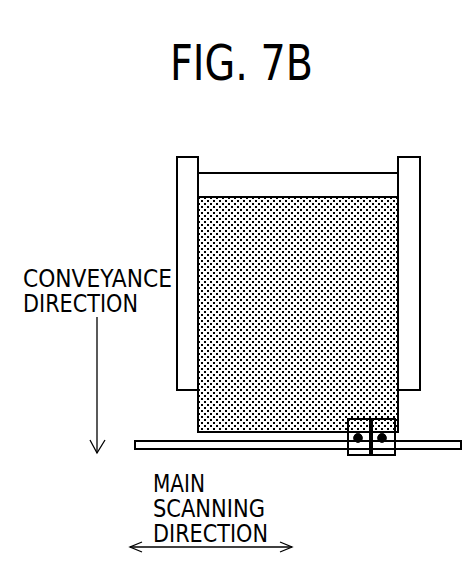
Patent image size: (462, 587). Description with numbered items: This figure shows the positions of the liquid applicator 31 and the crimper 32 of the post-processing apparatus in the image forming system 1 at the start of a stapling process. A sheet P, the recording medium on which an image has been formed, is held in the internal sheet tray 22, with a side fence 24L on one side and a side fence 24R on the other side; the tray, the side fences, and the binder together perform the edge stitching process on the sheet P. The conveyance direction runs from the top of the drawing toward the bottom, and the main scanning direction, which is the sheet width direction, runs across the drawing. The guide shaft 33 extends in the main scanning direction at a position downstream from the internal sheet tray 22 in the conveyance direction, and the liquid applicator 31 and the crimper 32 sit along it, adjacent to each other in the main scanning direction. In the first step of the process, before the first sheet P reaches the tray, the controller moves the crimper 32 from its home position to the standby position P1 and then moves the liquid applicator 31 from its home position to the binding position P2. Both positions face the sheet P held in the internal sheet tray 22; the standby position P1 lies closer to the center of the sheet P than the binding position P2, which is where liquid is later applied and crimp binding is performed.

The image forming system 1 is at (9, 388).
The internal sheet tray 22 is at (292, 173).
The side fence 24L is at (188, 150).
The side fence 24R is at (409, 150).
The sheet P is at (308, 327).
The standby position P1 is at (360, 432).
The binding position P2 is at (392, 436).
The liquid applicator 31 is at (387, 455).
The crimper 32 is at (357, 455).
The guide shaft 33 is at (160, 440).